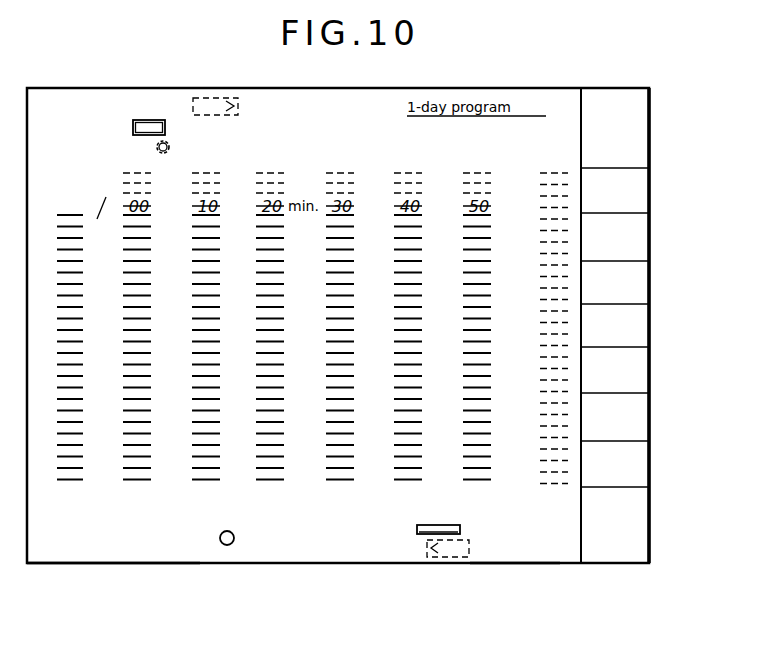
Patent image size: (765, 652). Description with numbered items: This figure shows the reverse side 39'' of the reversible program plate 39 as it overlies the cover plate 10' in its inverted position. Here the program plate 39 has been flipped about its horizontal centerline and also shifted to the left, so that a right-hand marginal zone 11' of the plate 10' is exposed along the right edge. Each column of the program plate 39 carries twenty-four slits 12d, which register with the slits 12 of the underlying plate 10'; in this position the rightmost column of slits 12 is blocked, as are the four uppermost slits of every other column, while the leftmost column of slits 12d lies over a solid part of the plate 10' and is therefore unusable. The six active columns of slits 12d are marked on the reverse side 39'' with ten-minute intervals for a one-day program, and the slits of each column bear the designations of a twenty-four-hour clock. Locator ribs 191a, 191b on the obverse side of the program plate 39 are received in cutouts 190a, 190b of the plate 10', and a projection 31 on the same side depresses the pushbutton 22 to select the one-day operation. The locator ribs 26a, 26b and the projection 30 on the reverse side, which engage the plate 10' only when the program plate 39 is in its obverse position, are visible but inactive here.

The plate 10' is at (338, 362).
The right-hand marginal zone 11' is at (615, 312).
The slits 12 is at (538, 217).
The slits 12d is at (156, 457).
The pushbutton 22 is at (170, 150).
The locator rib 26a is at (417, 530).
The locator rib 26b is at (165, 125).
The projection 30 is at (234, 534).
The projection 31 is at (156, 148).
The program plate 39 is at (515, 587).
The reverse side 39'' is at (113, 593).
The cutout 190a is at (192, 105).
The cutout 190b is at (456, 560).
The locator rib 191a is at (243, 107).
The locator rib 191b is at (428, 548).